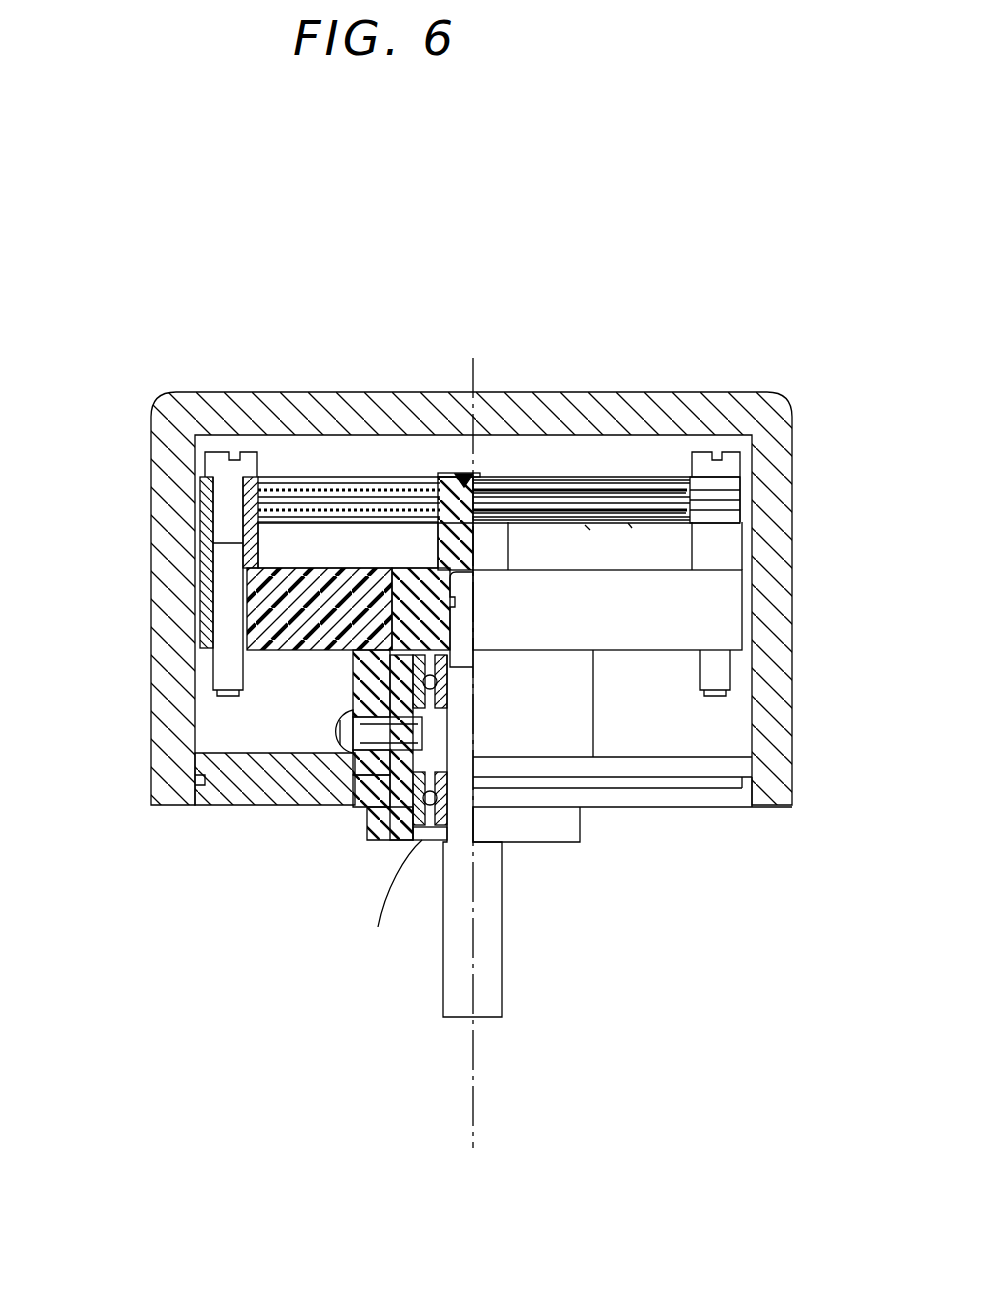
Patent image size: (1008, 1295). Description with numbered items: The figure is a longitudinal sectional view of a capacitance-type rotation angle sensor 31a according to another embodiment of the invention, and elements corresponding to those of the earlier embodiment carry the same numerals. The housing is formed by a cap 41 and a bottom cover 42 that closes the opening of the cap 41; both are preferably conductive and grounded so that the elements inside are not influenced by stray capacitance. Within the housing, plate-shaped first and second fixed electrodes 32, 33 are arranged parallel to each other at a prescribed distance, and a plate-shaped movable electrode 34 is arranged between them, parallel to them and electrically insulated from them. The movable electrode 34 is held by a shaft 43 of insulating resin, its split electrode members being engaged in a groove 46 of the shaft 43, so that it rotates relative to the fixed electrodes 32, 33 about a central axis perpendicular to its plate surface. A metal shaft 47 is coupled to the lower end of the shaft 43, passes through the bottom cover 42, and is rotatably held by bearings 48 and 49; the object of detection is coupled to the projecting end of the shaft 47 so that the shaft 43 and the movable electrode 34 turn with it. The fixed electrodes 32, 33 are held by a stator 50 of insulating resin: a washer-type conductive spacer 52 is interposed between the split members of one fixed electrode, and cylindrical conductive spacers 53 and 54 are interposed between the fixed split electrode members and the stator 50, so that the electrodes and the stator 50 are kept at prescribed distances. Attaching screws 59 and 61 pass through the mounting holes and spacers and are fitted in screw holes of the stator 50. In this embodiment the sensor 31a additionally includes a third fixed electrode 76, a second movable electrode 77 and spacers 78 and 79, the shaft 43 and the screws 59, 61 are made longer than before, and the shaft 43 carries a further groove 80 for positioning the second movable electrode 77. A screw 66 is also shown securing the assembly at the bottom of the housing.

The capacitance-type rotation angle sensor 31a is at (704, 320).
The first fixed electrode 32 is at (528, 477).
The second fixed electrode 33 is at (612, 495).
The movable electrode 34 is at (548, 480).
The cap 41 is at (172, 762).
The bottom cover 42 is at (735, 800).
The shaft 43 is at (455, 477).
The groove 46 is at (443, 477).
The shaft 47 is at (500, 945).
The bearing 48 is at (340, 775).
The bearing 49 is at (373, 840).
The stator 50 is at (702, 635).
The spacer 52 is at (737, 490).
The spacer 53 is at (203, 555).
The spacer 54 is at (722, 550).
The attaching screw 59 is at (240, 452).
The attaching screw 61 is at (736, 452).
The screw 66 is at (340, 733).
The third fixed electrode 76 is at (628, 523).
The second movable electrode 77 is at (585, 525).
The spacer 78 is at (205, 498).
The spacer 79 is at (740, 507).
The groove 80 is at (478, 473).